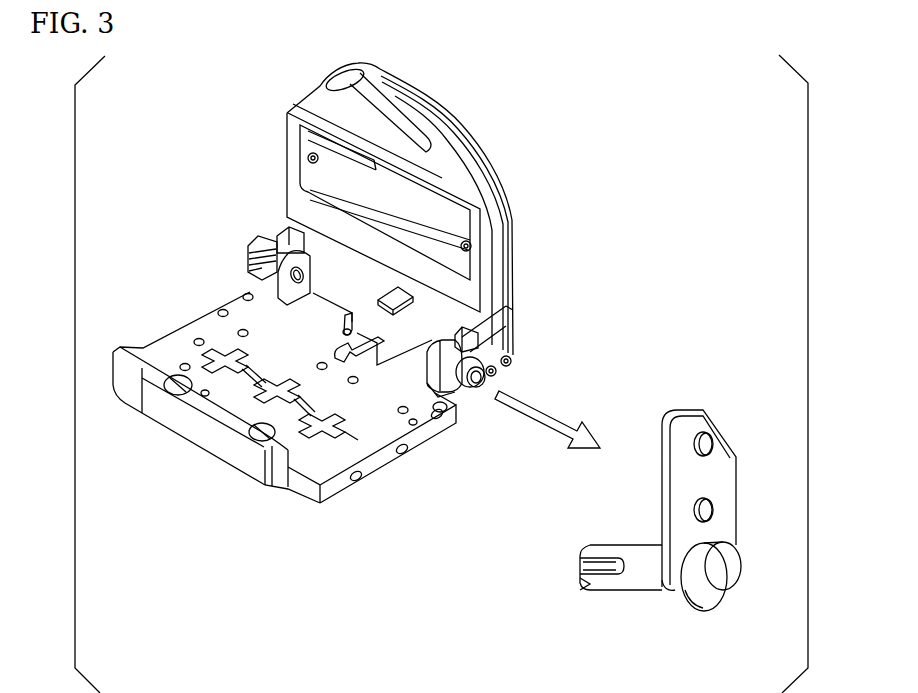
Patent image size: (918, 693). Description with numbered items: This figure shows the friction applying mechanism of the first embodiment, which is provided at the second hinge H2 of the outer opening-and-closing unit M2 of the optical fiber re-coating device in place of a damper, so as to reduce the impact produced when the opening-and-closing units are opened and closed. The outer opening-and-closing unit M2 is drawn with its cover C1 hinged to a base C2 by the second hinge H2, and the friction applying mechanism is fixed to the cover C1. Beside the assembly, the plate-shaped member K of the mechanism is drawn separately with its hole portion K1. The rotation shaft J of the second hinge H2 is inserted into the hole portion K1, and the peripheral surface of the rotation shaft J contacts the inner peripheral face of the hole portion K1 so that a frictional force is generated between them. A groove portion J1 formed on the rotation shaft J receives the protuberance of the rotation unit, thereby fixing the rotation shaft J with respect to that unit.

The outer opening-and-closing unit M2 is at (519, 133).
The cover C1 is at (493, 173).
The base plate C2 is at (362, 478).
The second hinge H2 is at (310, 279).
The rotation shaft J is at (481, 385).
The key plate K is at (720, 427).
The groove portion J1 is at (602, 568).
The hole portion K1 is at (692, 586).